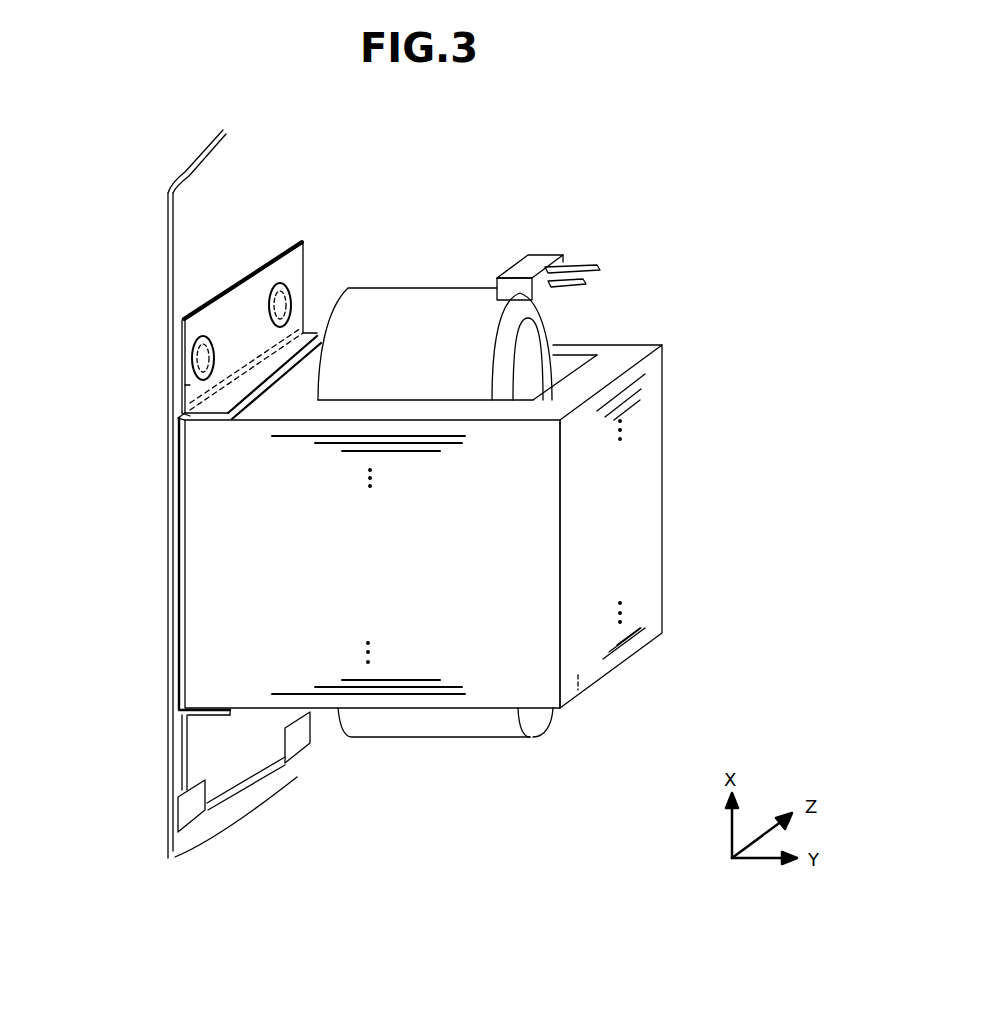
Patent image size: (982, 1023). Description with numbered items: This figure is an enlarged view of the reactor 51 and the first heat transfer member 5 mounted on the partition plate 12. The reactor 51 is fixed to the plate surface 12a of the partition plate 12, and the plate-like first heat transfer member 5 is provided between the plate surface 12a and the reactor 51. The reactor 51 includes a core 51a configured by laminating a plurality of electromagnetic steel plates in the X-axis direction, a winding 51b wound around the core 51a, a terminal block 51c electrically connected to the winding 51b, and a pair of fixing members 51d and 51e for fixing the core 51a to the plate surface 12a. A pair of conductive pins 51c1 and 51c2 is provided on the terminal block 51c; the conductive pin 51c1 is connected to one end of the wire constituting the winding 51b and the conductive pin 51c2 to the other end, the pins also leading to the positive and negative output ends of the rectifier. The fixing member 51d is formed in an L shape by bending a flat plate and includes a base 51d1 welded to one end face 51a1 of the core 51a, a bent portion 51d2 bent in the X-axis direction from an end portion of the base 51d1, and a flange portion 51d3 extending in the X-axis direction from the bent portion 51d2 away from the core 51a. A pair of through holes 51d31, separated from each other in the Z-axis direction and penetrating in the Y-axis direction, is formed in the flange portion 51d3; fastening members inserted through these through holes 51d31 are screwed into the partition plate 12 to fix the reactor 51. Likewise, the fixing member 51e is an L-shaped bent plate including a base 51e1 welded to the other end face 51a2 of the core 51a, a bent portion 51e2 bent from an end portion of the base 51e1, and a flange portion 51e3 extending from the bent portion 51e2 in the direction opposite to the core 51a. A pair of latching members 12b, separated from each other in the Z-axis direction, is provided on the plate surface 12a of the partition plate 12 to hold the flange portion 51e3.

The first heat transfer member 5 is at (172, 488).
The partition plate 12 is at (168, 212).
The plate surface 12a is at (205, 186).
The latching members 12b is at (293, 745).
The reactor 51 is at (467, 552).
The core 51a is at (467, 552).
The one end face 51a1 is at (637, 350).
The other end face 51a2 is at (578, 693).
The winding 51b is at (424, 302).
The terminal block 51c is at (593, 240).
The conductive pin 51c1 is at (575, 266).
The conductive pin 51c2 is at (572, 284).
The fixing member 51d is at (194, 306).
The base 51d1 is at (178, 442).
The bent portion 51d2 is at (185, 412).
The flange portion 51d3 is at (190, 388).
The through holes 51d31 is at (270, 304).
The fixing member 51e is at (206, 771).
The base 51e1 is at (192, 716).
The bent portion 51e2 is at (180, 710).
The flange portion 51e3 is at (205, 756).